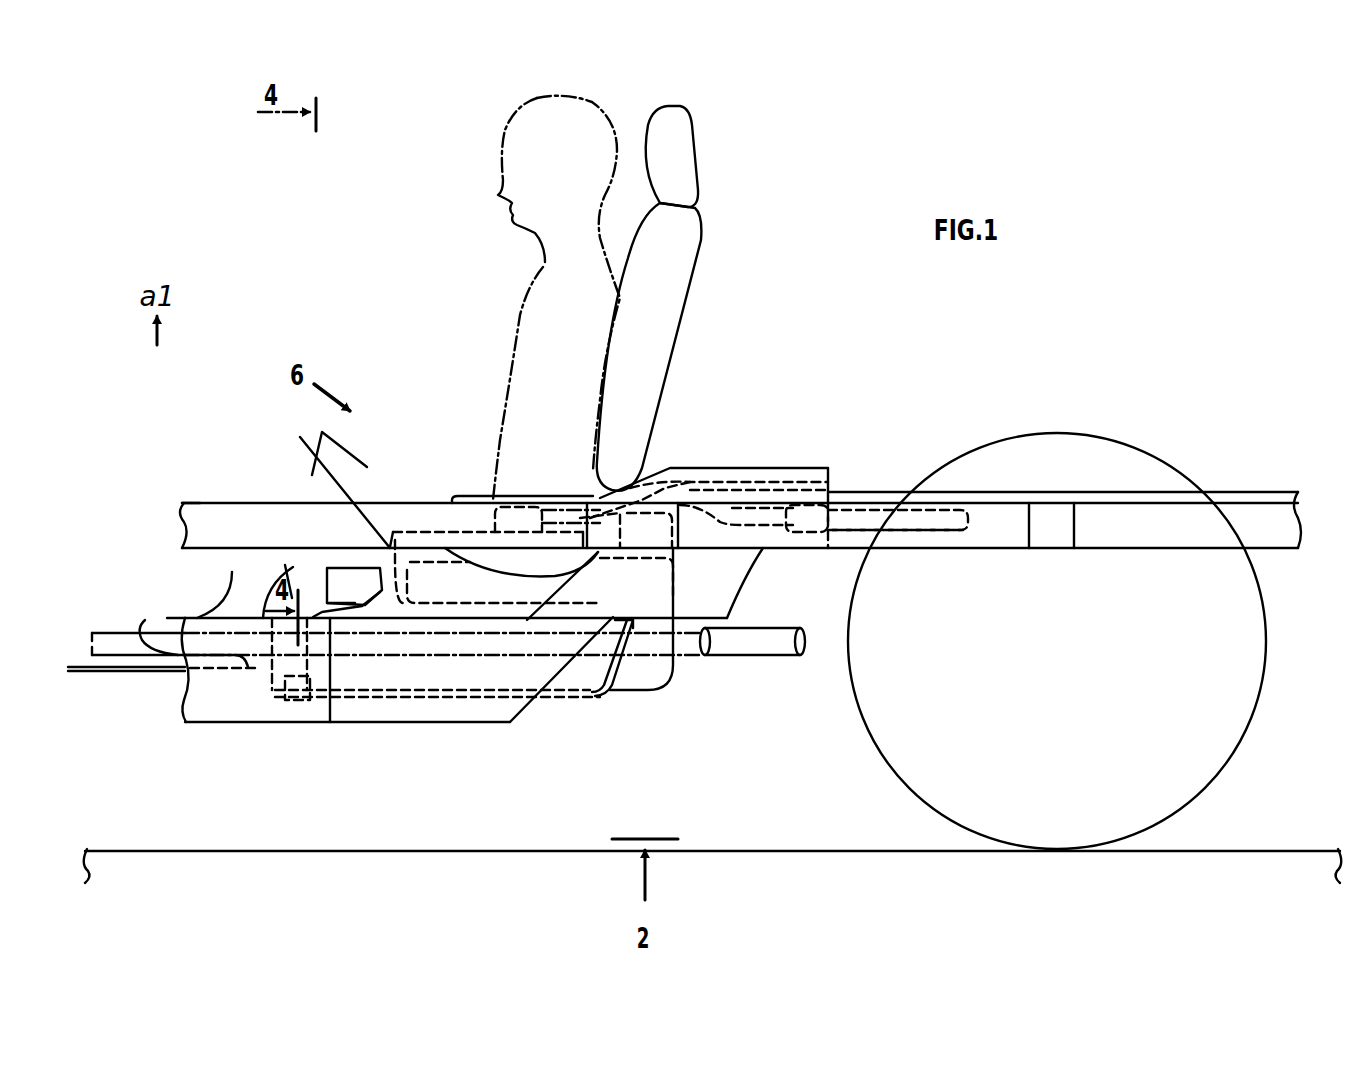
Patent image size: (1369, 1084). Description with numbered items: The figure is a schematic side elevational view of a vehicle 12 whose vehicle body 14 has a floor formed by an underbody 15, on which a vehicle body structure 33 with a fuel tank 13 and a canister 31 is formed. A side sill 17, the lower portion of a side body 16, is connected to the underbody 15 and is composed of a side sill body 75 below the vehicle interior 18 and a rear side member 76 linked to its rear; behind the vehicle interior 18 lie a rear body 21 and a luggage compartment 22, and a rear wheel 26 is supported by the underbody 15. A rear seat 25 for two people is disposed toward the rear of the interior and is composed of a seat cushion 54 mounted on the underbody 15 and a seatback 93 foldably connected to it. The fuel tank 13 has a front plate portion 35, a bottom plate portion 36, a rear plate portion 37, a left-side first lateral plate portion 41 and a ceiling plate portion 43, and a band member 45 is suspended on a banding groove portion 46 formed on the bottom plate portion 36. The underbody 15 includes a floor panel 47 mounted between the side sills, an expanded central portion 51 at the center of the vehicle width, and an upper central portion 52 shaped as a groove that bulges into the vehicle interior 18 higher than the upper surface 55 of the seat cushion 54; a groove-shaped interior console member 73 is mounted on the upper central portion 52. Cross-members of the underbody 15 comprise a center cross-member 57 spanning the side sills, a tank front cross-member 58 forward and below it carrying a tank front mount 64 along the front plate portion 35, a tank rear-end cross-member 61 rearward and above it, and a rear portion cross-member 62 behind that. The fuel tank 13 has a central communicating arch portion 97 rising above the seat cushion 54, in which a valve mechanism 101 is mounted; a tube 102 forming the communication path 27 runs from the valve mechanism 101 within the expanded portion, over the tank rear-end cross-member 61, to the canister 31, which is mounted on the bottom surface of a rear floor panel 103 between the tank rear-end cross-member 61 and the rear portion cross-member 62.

The vehicle 12 is at (215, 298).
The fuel tank 13 is at (330, 568).
The vehicle body 14 is at (150, 605).
The underbody 15 is at (210, 723).
The side body 16 is at (185, 703).
The side sill 17 is at (319, 723).
The vehicle interior 18 is at (380, 190).
The rear body 21 is at (1200, 290).
The luggage compartment 22 is at (1160, 386).
The rear seat 25 is at (729, 170).
The rear wheel 26 is at (1240, 754).
The communication path 27 is at (707, 486).
The canister 31 is at (991, 510).
The vehicle body structure 33 is at (555, 474).
The front plate portion 35 is at (232, 572).
The bottom plate portion 36 is at (378, 691).
The rear plate portion 37 is at (673, 640).
The first lateral plate portion 41 is at (576, 689).
The ceiling plate portion 43 is at (322, 592).
The band member 45 is at (613, 692).
The banding groove portion 46 is at (468, 698).
The floor panel 47 is at (84, 664).
The expanded central portion 51 is at (374, 500).
The upper central portion 52 is at (416, 530).
The seat cushion 54 is at (233, 575).
The upper surface 55 is at (440, 556).
The center cross-member 57 is at (285, 565).
The tank front cross-member 58 is at (270, 686).
The tank rear-end cross-member 61 is at (687, 490).
The rear portion cross-member 62 is at (1087, 523).
The tank front mount 64 is at (279, 692).
The interior console member 73 is at (580, 490).
The side sill body 75 is at (185, 723).
The rear side member 76 is at (749, 458).
The seatback 93 is at (703, 243).
The central communicating arch portion 97 is at (473, 522).
The valve mechanism 101 is at (519, 505).
The tube 102 is at (633, 490).
The rear floor panel 103 is at (950, 496).